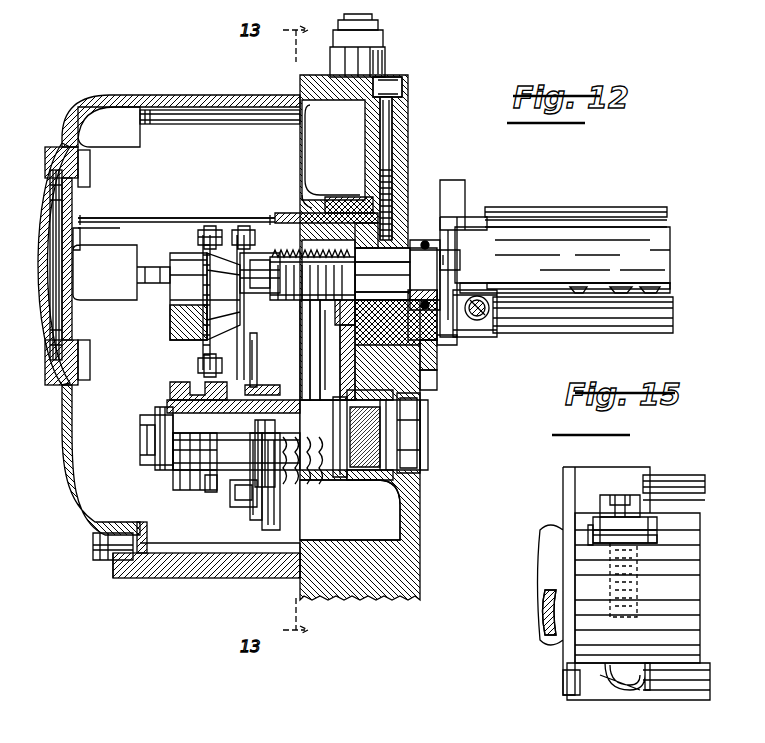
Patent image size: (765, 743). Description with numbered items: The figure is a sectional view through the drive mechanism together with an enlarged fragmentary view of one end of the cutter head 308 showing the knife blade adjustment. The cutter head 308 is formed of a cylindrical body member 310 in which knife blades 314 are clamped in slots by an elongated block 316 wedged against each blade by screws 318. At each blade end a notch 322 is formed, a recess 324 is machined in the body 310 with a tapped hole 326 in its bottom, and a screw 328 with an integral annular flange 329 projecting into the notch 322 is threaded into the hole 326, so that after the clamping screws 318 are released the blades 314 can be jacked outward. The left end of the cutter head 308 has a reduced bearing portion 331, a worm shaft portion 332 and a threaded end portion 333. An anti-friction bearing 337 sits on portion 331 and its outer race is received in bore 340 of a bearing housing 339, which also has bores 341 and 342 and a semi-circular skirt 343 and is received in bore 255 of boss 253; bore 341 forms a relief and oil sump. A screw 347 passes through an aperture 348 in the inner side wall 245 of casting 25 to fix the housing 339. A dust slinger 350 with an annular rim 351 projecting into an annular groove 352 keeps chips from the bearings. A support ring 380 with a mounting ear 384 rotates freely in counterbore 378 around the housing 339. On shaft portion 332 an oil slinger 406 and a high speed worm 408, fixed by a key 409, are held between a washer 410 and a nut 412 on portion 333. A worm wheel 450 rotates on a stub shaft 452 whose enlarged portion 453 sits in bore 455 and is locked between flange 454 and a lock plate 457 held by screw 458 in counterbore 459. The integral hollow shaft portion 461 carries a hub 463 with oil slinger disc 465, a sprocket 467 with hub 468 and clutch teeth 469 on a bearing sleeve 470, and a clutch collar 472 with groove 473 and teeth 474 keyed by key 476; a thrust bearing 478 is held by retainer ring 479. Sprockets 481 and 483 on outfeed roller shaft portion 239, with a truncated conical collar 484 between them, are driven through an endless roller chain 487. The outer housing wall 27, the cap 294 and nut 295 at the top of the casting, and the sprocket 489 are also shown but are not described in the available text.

In FIG. 12, the casting 25 is at (410, 90).
In FIG. 12, the housing 27 is at (213, 94).
In FIG. 12, the outfeed roller shaft portion 239 is at (124, 264).
In FIG. 12, the inner side wall 245 is at (365, 140).
In FIG. 12, the boss 253 is at (347, 200).
In FIG. 12, the bore 255 is at (308, 206).
In FIG. 12, the cap 294 is at (370, 24).
In FIG. 12, the nut 295 is at (385, 40).
In FIG. 12, the cutter head 308 is at (607, 207).
In FIG. 12, the cylindrical body member 310 is at (668, 222).
In FIG. 15, the cylindrical body member 310 is at (695, 530).
In FIG. 12, the knife blade 314 is at (673, 312).
In FIG. 15, the knife blade 314 is at (688, 480).
In FIG. 12, the elongated block 316 is at (628, 286).
In FIG. 15, the elongated block 316 is at (650, 690).
In FIG. 12, the screws 318 is at (595, 286).
In FIG. 12, the notch 322 is at (492, 316).
In FIG. 15, the notch 322 is at (655, 535).
In FIG. 12, the recess 324 is at (492, 328).
In FIG. 15, the recess 324 is at (605, 541).
In FIG. 15, the tapped hole 326 is at (634, 600).
In FIG. 12, the screw 328 is at (488, 291).
In FIG. 15, the screw 328 is at (630, 495).
In FIG. 12, the annular flange 329 is at (478, 278).
In FIG. 15, the annular flange 329 is at (590, 527).
In FIG. 12, the reduced bearing portion 331 is at (450, 258).
In FIG. 12, the worm shaft portion 332 is at (382, 259).
In FIG. 12, the threaded end portion 333 is at (190, 296).
In FIG. 12, the anti-friction bearing 337 is at (450, 244).
In FIG. 12, the bearing housing 339 is at (366, 233).
In FIG. 12, the bore 340 is at (445, 345).
In FIG. 12, the bore 341 is at (382, 293).
In FIG. 12, the bore 342 is at (382, 277).
In FIG. 12, the semi-circular skirt 343 is at (268, 190).
In FIG. 12, the screw 347 is at (393, 128).
In FIG. 12, the aperture 348 is at (396, 116).
In FIG. 12, the dust slinger 350 is at (425, 275).
In FIG. 12, the annular rim 351 is at (455, 340).
In FIG. 12, the annular groove 352 is at (440, 365).
In FIG. 12, the counterbore 378 is at (385, 345).
In FIG. 12, the support ring 380 is at (440, 385).
In FIG. 12, the mounting ear 384 is at (468, 190).
In FIG. 12, the oil slinger 406 is at (355, 312).
In FIG. 12, the high speed worm 408 is at (318, 395).
In FIG. 12, the key 409 is at (310, 256).
In FIG. 12, the washer 410 is at (260, 385).
In FIG. 12, the nut 412 is at (262, 295).
In FIG. 12, the worm wheel 450 is at (317, 350).
In FIG. 12, the stub shaft 452 is at (408, 419).
In FIG. 12, the enlarged portion 453 is at (375, 478).
In FIG. 12, the flange 454 is at (343, 485).
In FIG. 12, the bore 455 is at (350, 395).
In FIG. 12, the lock plate 457 is at (425, 462).
In FIG. 12, the screw 458 is at (430, 430).
In FIG. 12, the counterbore 459 is at (428, 470).
In FIG. 12, the hollow shaft portion 461 is at (255, 424).
In FIG. 12, the hub 463 is at (262, 490).
In FIG. 12, the oil slinger disc 465 is at (270, 520).
In FIG. 12, the sprocket 467 is at (215, 375).
In FIG. 12, the hub 468 is at (262, 385).
In FIG. 12, the clutch teeth 469 is at (245, 510).
In FIG. 12, the bearing sleeve 470 is at (236, 443).
In FIG. 12, the clutch collar 472 is at (173, 389).
In FIG. 12, the annular peripheral groove 473 is at (195, 492).
In FIG. 12, the clutch teeth 474 is at (212, 497).
In FIG. 12, the key 476 is at (165, 398).
In FIG. 12, the thrust bearing 478 is at (158, 470).
In FIG. 12, the retainer ring 479 is at (150, 456).
In FIG. 12, the sprocket 481 is at (215, 345).
In FIG. 12, the sprocket 483 is at (205, 296).
In FIG. 12, the bracket 484 is at (175, 225).
In FIG. 12, the endless roller chain 487 is at (230, 232).
In FIG. 12, the sprocket 489 is at (198, 239).